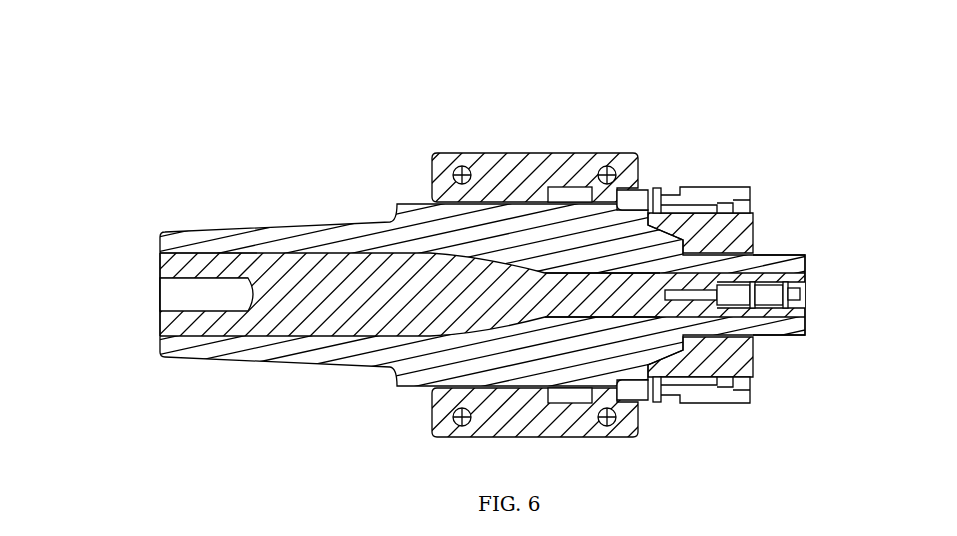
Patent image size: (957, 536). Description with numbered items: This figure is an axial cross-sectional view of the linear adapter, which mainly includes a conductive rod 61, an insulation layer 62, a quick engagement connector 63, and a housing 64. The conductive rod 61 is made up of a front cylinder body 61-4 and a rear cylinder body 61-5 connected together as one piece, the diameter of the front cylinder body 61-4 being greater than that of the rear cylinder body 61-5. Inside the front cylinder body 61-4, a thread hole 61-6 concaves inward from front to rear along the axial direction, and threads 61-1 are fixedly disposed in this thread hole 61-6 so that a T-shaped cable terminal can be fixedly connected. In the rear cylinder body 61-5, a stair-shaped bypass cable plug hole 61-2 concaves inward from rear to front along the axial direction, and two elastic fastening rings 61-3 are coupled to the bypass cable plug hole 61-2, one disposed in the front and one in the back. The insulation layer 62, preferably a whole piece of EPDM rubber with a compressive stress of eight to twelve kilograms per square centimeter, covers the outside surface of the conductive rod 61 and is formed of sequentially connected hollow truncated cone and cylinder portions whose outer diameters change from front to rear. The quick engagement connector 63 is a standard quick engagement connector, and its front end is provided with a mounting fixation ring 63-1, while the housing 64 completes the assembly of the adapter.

The conductive rod 61 is at (307, 293).
The threads 61-1 is at (183, 295).
The bypass cable plug hole 61-2 is at (765, 297).
The elastic fastening rings 61-3 is at (753, 287).
The front cylinder body 61-4 is at (185, 268).
The rear cylinder body 61-5 is at (590, 297).
The thread hole 61-6 is at (170, 290).
The insulation layer 62 is at (385, 230).
The quick engagement connector 63 is at (735, 187).
The mounting fixation ring 63-1 is at (636, 163).
The housing 64 is at (510, 165).